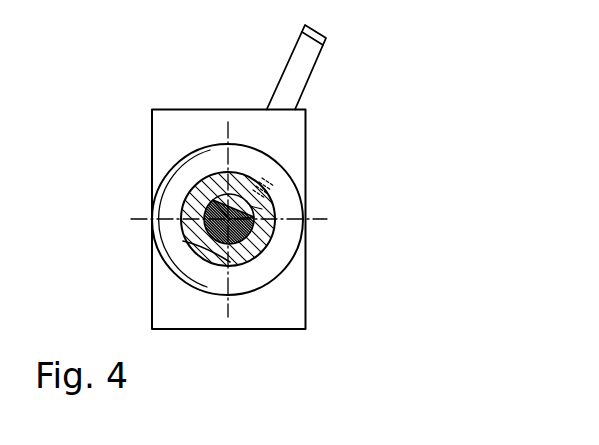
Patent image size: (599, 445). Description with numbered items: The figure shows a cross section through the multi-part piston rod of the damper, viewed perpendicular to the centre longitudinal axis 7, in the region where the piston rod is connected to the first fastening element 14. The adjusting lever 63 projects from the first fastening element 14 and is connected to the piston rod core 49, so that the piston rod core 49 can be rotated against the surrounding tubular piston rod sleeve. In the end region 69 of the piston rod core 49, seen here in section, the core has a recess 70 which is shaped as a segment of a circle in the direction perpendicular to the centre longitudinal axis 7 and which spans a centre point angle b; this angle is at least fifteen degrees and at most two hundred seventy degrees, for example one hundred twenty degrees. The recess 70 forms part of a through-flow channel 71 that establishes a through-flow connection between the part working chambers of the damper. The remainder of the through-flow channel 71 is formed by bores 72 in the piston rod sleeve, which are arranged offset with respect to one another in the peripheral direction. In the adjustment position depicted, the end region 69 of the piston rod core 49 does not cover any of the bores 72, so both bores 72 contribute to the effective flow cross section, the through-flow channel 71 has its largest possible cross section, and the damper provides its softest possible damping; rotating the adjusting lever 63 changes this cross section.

The first fastening element 14 is at (148, 273).
The adjusting lever 63 is at (298, 73).
The recess 70 is at (210, 178).
The centre longitudinal axis 7 is at (197, 243).
The piston rod core 49 is at (343, 230).
The end region 69 is at (254, 228).
The centre point angle b is at (233, 194).
The through-flow channel 71 is at (280, 195).
The bores 72 is at (262, 209).